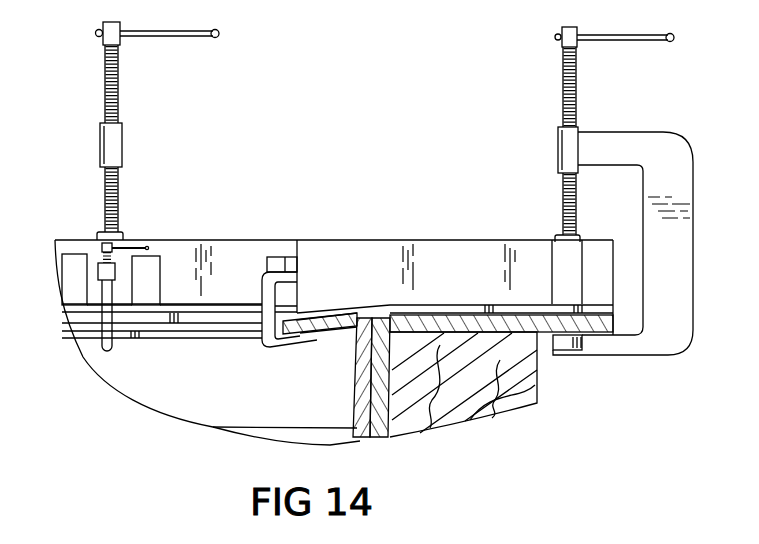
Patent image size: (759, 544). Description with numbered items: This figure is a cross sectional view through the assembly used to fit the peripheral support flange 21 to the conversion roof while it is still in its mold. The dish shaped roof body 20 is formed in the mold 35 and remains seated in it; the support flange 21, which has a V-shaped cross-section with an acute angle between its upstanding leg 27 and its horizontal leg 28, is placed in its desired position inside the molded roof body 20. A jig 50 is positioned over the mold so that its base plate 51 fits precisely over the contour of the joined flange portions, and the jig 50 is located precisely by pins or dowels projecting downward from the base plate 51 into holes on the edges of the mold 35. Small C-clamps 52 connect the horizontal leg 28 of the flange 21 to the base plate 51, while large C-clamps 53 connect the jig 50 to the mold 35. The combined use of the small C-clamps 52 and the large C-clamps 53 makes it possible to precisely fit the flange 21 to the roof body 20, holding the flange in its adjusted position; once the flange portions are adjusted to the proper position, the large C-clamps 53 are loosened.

The roof body 20 is at (365, 433).
The support flange 21 is at (347, 323).
The upstanding leg 27 is at (358, 408).
The horizontal leg 28 is at (333, 338).
The mold 35 is at (550, 327).
The jig 50 is at (368, 222).
The base plate 51 is at (445, 307).
The small C-clamps 52 is at (273, 347).
The large C-clamps 53 is at (112, 153).